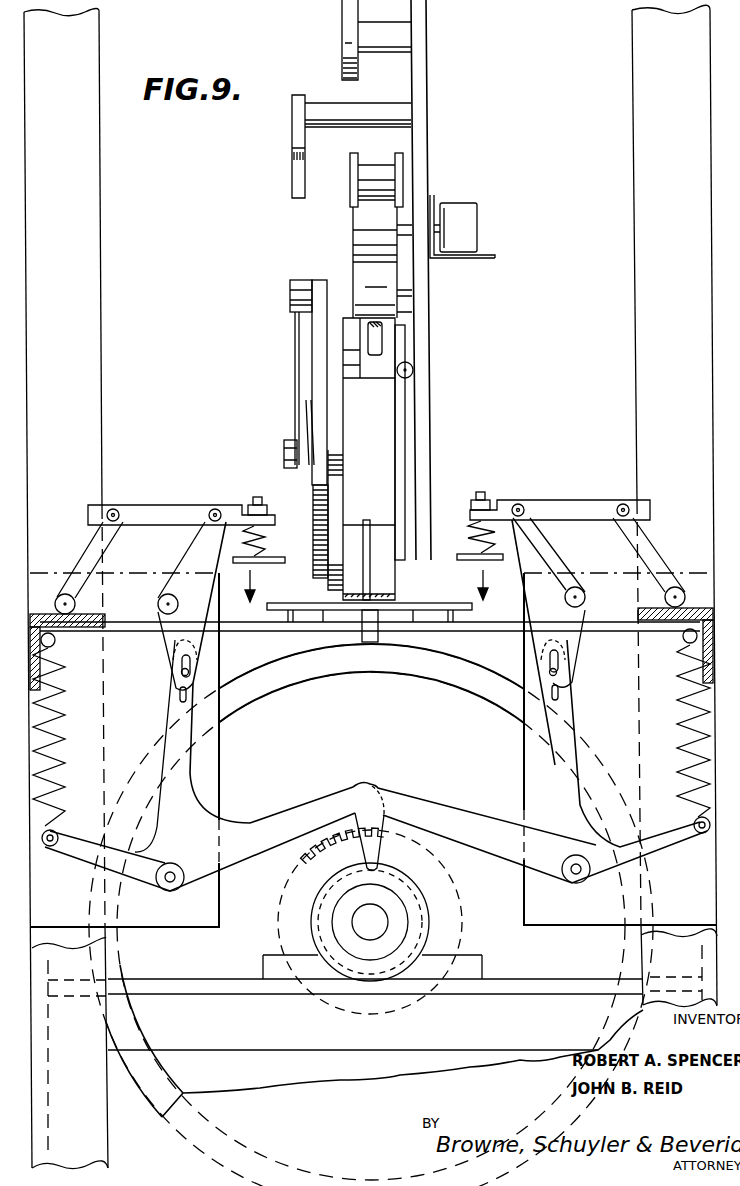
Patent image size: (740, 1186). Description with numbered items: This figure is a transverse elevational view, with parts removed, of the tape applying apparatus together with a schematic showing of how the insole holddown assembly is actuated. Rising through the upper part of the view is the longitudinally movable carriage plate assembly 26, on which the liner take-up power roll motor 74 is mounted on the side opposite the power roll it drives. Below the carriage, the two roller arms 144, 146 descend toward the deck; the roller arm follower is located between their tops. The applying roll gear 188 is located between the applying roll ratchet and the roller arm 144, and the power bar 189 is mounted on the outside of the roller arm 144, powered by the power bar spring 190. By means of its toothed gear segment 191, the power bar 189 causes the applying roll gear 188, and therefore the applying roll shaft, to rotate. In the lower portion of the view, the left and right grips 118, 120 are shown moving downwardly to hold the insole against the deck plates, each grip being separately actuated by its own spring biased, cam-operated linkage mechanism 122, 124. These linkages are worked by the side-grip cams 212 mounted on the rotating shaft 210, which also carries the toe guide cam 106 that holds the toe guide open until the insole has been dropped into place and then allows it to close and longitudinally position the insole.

The carriage plate assembly 26 is at (425, 162).
The liner take-up power roll motor 74 is at (470, 238).
The toe guide cam 106 is at (425, 672).
The left grip 118 is at (276, 564).
The right grip 120 is at (468, 562).
The spring biased cam-operated linkage mechanism 122 is at (196, 771).
The spring biased cam-operated linkage mechanism 124 is at (549, 767).
The roller arm 144 is at (340, 396).
The roller arm 146 is at (398, 436).
The applying roll gear 188 is at (312, 555).
The power bar 189 is at (320, 376).
The power bar spring 190 is at (298, 335).
The toothed gear segment 191 is at (315, 500).
The shaft 210 is at (370, 922).
The side-grip cams 212 is at (412, 905).